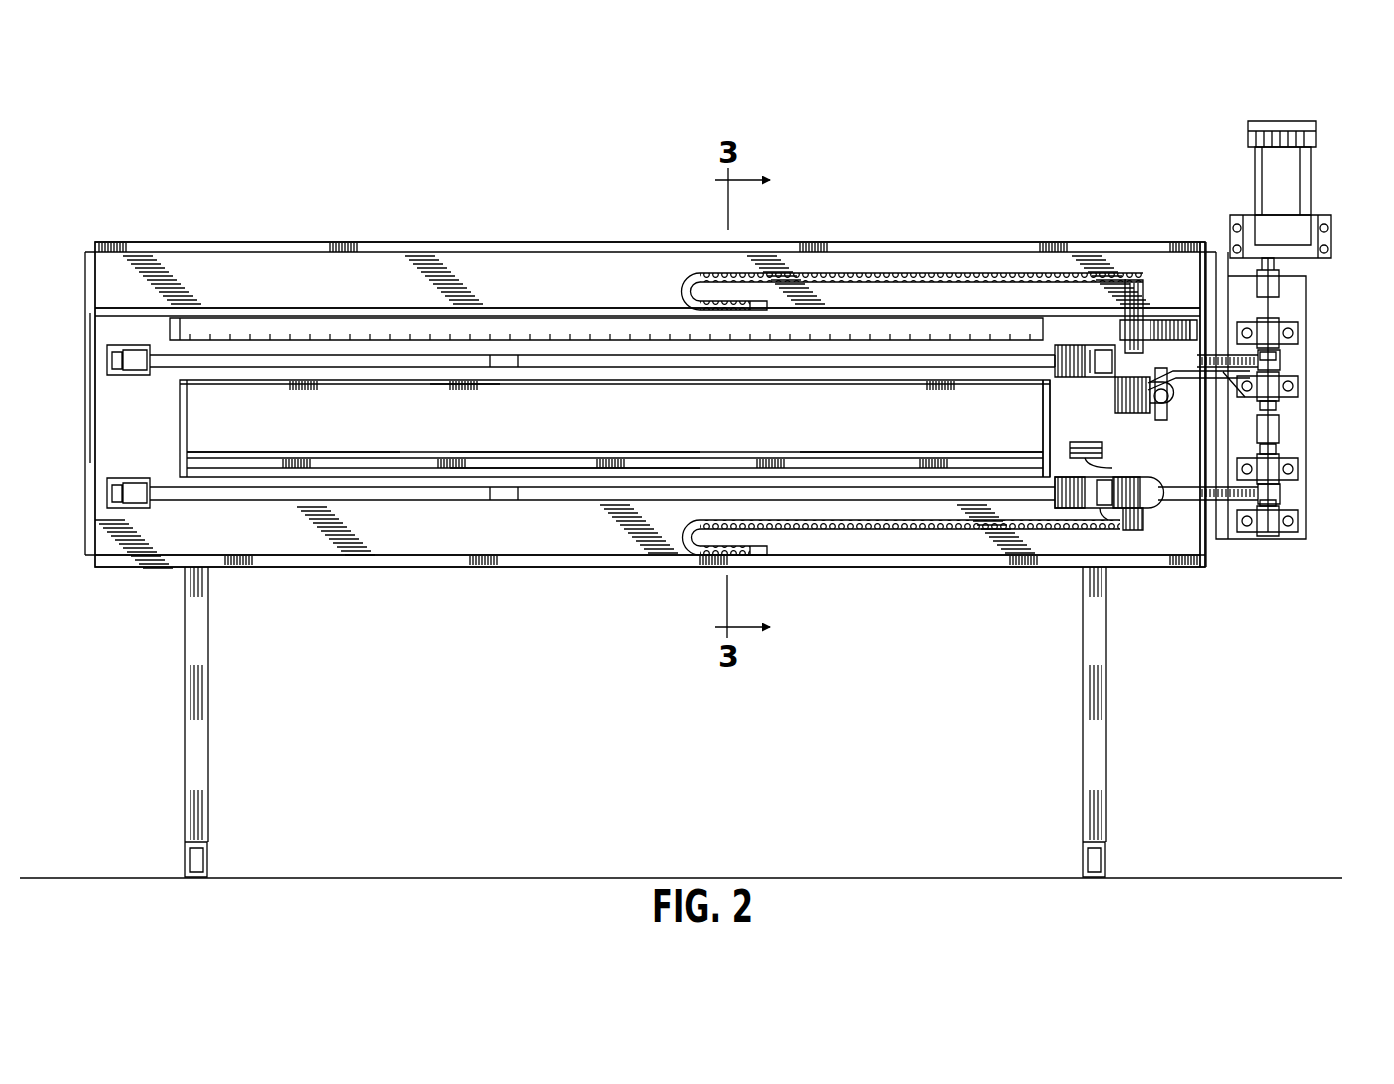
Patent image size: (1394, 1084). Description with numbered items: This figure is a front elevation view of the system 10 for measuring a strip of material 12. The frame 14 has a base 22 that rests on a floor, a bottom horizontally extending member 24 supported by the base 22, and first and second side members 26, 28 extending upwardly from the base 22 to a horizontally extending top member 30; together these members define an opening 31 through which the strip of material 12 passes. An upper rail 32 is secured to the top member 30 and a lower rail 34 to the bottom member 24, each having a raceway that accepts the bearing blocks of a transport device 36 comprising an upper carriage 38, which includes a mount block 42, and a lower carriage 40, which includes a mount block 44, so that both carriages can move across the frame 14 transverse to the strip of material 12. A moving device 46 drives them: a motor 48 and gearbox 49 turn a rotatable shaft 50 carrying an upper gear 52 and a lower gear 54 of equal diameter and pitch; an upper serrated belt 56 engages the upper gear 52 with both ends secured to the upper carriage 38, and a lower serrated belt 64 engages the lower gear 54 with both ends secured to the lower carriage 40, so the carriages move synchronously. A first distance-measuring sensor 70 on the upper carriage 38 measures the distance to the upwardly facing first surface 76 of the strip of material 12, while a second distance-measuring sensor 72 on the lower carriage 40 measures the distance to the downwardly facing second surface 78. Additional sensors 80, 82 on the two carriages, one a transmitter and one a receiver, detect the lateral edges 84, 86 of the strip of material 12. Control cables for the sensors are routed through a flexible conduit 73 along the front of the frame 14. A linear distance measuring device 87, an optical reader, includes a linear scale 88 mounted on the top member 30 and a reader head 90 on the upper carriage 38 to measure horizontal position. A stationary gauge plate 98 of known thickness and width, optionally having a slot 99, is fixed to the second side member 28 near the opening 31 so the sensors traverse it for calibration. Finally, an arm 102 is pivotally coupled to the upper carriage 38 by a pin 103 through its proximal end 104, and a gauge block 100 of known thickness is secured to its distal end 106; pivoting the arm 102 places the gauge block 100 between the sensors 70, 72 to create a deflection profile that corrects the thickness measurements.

The system 10 is at (130, 100).
The strip of material 12 is at (374, 448).
The frame 14 is at (179, 239).
The base 22 is at (185, 730).
The bottom member 24 is at (412, 543).
The first side member 26 is at (136, 445).
The second side member 28 is at (1199, 480).
The top member 30 is at (269, 297).
The opening 31 is at (470, 407).
The upper rail 32 is at (615, 360).
The lower rail 34 is at (587, 495).
The transport device 36 is at (1032, 467).
The upper carriage 38 is at (1092, 346).
The lower carriage 40 is at (1098, 500).
The mount block 42 is at (1074, 340).
The mount block 44 is at (1060, 513).
The moving device 46 is at (1334, 124).
The motor 48 is at (1258, 178).
The gearbox 49 is at (1331, 240).
The rotatable shaft 50 is at (1276, 302).
The upper gear 52 is at (1282, 352).
The lower gear 54 is at (1282, 484).
The upper serrated belt 56 is at (157, 363).
The lower serrated belt 64 is at (152, 493).
The first distance-measuring sensor 70 is at (1135, 377).
The second distance-measuring sensor 72 is at (1132, 531).
The flexible conduit 73 is at (870, 272).
The first surface 76 is at (552, 451).
The second surface 78 is at (535, 459).
The sensor 80 is at (1102, 350).
The sensor 82 is at (1102, 508).
The lateral edge 84 is at (925, 455).
The lateral edge 86 is at (303, 452).
The linear distance measuring device 87 is at (1198, 254).
The linear scale 88 is at (318, 327).
The reader head 90 is at (1132, 281).
The gauge plate 98 is at (1077, 442).
The slot 99 is at (1115, 466).
The gauge block 100 is at (1282, 432).
The arm 102 is at (1282, 282).
The pin 103 is at (1161, 404).
The proximal end 104 is at (1189, 319).
The distal end 106 is at (1250, 379).